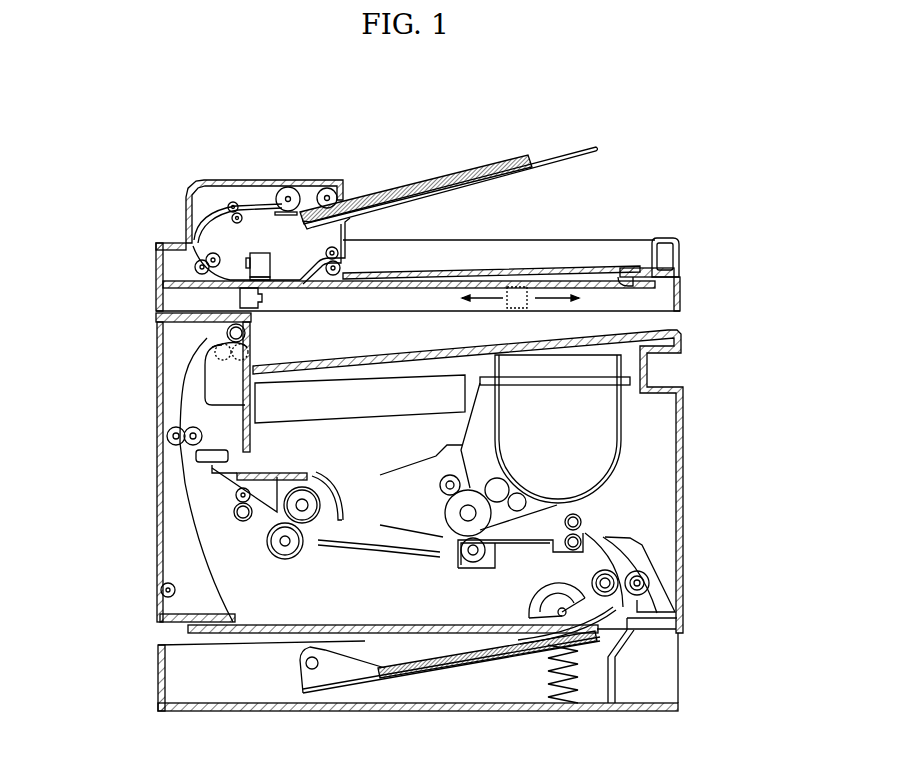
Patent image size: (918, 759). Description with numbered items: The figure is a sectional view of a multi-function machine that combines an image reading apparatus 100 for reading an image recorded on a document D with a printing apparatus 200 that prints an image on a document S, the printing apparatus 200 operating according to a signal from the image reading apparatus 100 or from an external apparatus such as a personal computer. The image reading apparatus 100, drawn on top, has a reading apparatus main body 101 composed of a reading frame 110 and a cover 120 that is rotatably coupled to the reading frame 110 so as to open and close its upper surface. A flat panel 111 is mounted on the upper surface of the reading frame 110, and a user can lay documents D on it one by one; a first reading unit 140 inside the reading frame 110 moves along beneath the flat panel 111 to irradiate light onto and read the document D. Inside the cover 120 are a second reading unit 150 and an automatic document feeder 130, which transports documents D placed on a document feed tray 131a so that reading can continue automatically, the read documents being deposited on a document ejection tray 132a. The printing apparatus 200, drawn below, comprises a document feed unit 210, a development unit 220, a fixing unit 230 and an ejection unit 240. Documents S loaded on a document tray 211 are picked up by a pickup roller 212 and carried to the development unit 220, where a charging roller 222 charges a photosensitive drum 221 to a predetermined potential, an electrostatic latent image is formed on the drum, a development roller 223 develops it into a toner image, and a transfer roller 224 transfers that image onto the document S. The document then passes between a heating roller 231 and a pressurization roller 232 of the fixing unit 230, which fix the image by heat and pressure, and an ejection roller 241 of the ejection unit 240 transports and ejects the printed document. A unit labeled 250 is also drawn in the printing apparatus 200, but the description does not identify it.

The image reading apparatus 100 is at (397, 222).
The reading apparatus main body 101 is at (352, 245).
The reading frame 110 is at (157, 292).
The flat panel 111 is at (403, 284).
The cover 120 is at (186, 210).
The automatic document feeder 130 is at (310, 178).
The document feed tray 131a is at (568, 154).
The document ejection tray 132a is at (531, 270).
The first reading unit 140 is at (262, 298).
The second reading unit 150 is at (257, 253).
The document D is at (448, 176).
The printing apparatus 200 is at (432, 534).
The document feed unit 210 is at (418, 669).
The document tray 211 is at (420, 690).
The pickup roller 212 is at (530, 604).
The development unit 220 is at (555, 472).
The photosensitive drum 221 is at (444, 516).
The charging roller 222 is at (440, 478).
The development roller 223 is at (501, 480).
The transfer roller 224 is at (462, 554).
The fixing unit 230 is at (353, 521).
The heating roller 231 is at (312, 488).
The pressurization roller 232 is at (286, 560).
The ejection unit 240 is at (211, 473).
The ejection roller 241 is at (246, 333).
The laser scanning unit 250 is at (360, 421).
The document S is at (402, 658).